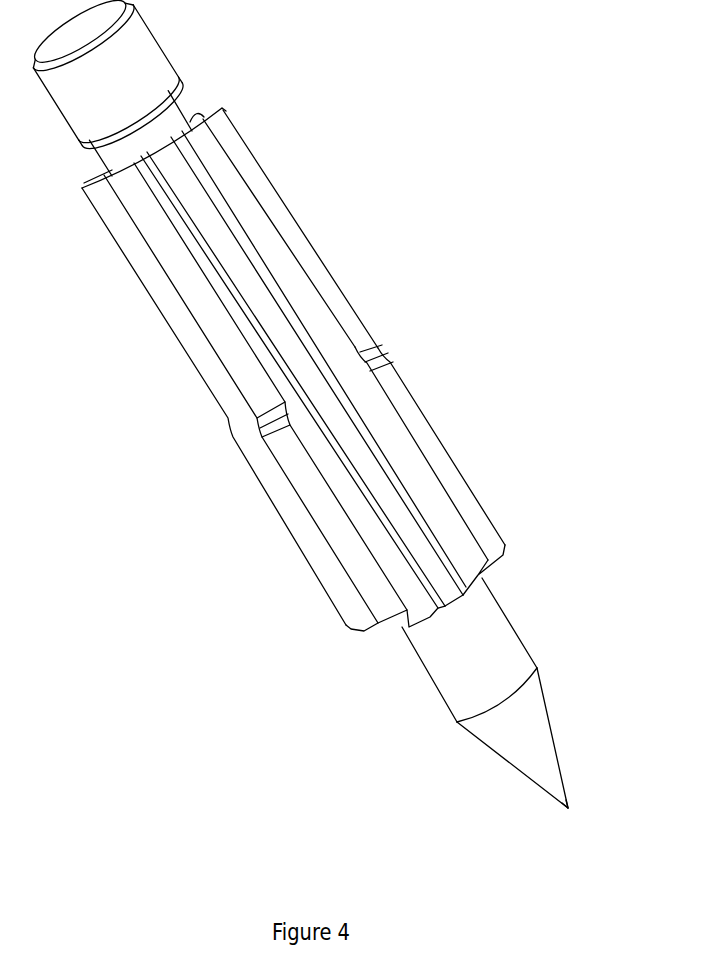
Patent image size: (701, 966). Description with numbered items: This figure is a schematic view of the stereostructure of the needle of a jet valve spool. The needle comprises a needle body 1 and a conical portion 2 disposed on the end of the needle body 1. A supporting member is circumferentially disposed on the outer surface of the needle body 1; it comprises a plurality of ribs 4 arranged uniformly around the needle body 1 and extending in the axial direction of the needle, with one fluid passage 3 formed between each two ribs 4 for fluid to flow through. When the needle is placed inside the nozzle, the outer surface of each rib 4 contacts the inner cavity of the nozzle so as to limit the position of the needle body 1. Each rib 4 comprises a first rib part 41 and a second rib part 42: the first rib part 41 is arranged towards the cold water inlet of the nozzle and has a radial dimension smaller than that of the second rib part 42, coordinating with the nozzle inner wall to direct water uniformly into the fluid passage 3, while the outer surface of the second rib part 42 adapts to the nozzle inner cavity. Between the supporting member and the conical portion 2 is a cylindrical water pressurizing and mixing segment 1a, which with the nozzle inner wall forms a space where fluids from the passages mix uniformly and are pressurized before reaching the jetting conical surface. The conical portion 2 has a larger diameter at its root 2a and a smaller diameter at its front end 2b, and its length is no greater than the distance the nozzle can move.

The needle body 1 is at (326, 650).
The water pressurizing and mixing segment 1a is at (458, 675).
The conical portion 2 is at (368, 699).
The root 2a is at (533, 687).
The front end 2b is at (563, 798).
The fluid passage 3 is at (280, 334).
The rib 4 is at (327, 332).
The first rib part 41 is at (253, 165).
The second rib part 42 is at (425, 410).